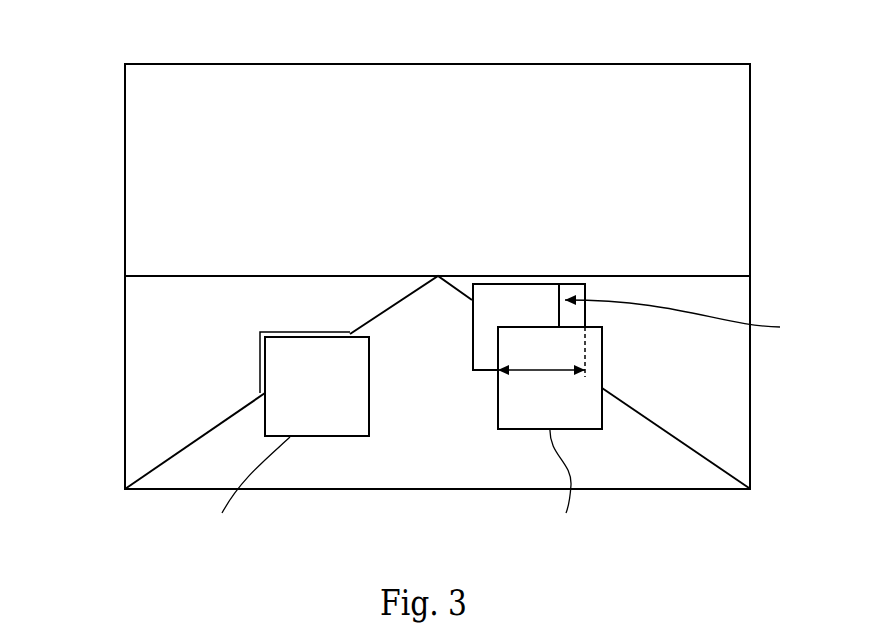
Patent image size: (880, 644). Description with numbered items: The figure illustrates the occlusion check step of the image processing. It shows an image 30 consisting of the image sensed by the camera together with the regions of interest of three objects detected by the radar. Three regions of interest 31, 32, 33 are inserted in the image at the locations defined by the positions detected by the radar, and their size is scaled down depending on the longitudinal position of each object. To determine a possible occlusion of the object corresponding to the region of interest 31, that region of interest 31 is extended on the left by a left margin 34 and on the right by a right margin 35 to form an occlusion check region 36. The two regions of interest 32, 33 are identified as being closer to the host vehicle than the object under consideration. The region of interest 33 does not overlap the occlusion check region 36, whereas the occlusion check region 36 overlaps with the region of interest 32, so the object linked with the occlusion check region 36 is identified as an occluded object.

The image 30 is at (100, 68).
The region of interest 31 is at (522, 284).
The region of interest 32 is at (602, 370).
The region of interest 33 is at (260, 373).
The left margin 34 is at (457, 283).
The right margin 35 is at (577, 280).
The occlusion check region 36 is at (427, 468).